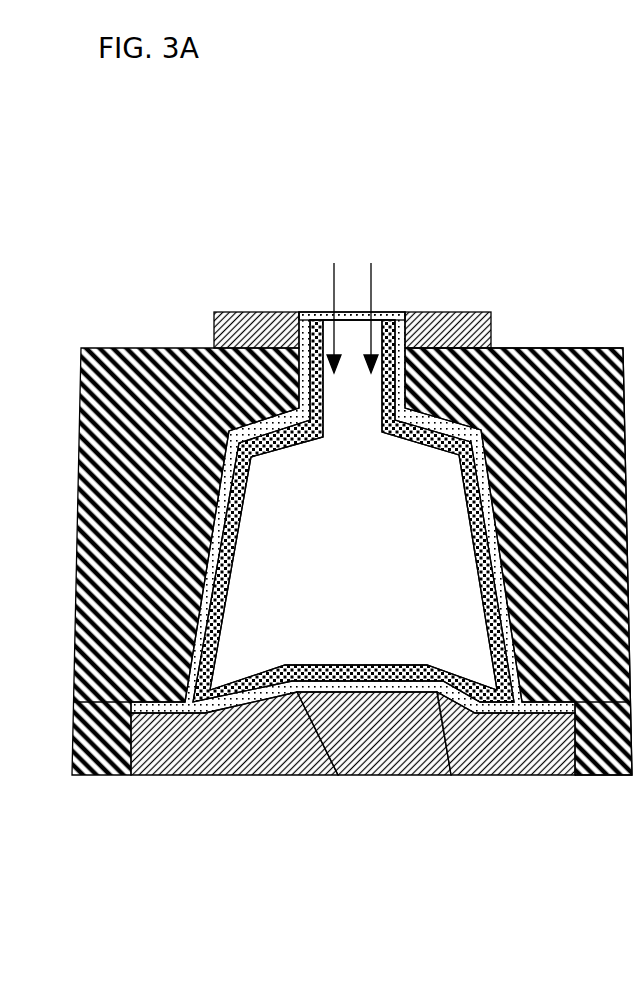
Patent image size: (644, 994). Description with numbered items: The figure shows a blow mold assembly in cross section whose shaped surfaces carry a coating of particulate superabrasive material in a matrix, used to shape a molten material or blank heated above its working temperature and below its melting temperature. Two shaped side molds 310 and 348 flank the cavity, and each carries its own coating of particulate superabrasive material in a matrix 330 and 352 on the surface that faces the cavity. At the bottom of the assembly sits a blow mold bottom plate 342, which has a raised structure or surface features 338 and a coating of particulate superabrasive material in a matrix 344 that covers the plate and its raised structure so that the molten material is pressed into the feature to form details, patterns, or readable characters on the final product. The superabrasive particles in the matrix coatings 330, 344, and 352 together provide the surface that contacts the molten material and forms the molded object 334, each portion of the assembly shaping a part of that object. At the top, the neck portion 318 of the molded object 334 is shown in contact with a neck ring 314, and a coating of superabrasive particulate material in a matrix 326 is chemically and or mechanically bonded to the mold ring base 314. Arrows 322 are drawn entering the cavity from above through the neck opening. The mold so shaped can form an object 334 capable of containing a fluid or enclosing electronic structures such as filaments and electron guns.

The shaped side mold 310 is at (130, 376).
The neck ring 314 is at (262, 325).
The neck portion 318 is at (316, 334).
The etchant / ion flow arrows 322 is at (352, 293).
The coating of superabrasive particulate material in a matrix 326 is at (398, 335).
The coating of particulate superabrasive material in a matrix 330 is at (270, 445).
The molded object 334 is at (224, 580).
The surface features 338 is at (338, 775).
The blow mold bottom plate 342 is at (177, 755).
The coating of a particulate superabrasive material in a matrix 344 is at (451, 775).
The shaped side mold 348 is at (515, 370).
The coating of particulate superabrasive material in a matrix 352 is at (500, 643).